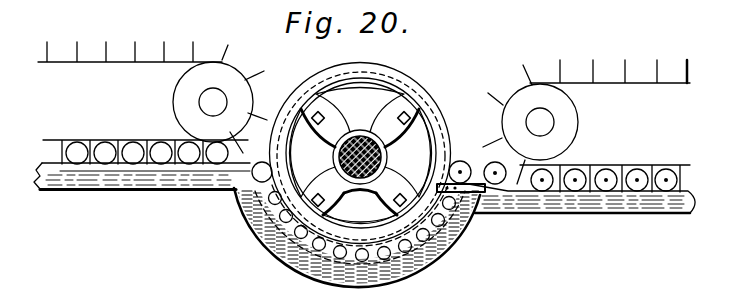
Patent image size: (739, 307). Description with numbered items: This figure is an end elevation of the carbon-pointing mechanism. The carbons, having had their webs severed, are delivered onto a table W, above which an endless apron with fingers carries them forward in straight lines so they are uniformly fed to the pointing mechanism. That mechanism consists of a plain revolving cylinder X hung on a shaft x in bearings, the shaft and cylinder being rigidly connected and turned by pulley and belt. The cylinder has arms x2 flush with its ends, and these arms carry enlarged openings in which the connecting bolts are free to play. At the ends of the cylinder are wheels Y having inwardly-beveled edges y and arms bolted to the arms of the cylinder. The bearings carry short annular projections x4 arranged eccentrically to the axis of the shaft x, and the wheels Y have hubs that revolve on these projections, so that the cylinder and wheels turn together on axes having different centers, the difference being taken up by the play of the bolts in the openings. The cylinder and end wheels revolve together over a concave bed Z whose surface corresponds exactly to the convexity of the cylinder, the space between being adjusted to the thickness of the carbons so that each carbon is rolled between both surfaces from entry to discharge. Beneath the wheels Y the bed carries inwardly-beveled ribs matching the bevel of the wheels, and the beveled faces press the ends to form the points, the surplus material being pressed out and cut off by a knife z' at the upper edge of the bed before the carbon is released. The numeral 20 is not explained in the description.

The track rollers 20 is at (98, 138).
The table W is at (65, 175).
The revolving cylinder X is at (412, 80).
The wheels Y is at (275, 160).
The shaft x is at (360, 135).
The arms x2 is at (403, 132).
The annular projections x4 is at (360, 206).
The concave bed Z is at (350, 267).
The inwardly-beveled edges y is at (312, 273).
The knife z' is at (367, 224).